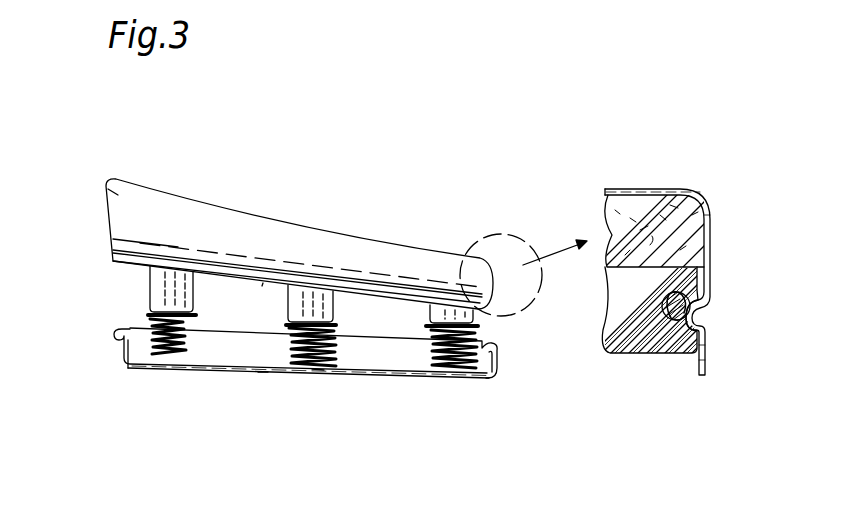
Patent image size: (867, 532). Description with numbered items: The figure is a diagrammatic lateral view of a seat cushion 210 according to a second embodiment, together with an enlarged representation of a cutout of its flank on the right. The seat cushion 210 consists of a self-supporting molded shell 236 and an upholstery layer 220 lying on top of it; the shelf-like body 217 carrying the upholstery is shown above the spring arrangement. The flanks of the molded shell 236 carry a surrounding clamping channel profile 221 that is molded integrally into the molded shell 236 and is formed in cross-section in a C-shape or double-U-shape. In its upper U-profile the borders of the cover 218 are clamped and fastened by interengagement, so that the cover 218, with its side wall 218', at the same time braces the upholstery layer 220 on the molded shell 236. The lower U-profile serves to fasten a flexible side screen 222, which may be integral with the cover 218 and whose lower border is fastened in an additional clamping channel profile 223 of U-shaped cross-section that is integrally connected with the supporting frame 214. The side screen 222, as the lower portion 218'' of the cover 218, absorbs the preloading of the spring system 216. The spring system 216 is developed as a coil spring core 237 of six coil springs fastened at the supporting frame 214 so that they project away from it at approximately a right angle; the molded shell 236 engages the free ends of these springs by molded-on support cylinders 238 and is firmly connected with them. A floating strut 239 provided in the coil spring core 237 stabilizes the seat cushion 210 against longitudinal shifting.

The seat cushion 210 is at (243, 190).
The supporting frame 214 is at (213, 368).
The spring system 216 is at (318, 376).
The shelf 217 is at (362, 226).
The cover 218 is at (657, 244).
The profile side wall 218' is at (726, 193).
The lower portion of the cover 218'' is at (688, 402).
The upholstery layer 220 is at (118, 196).
The clamping channel profile 221 is at (118, 249).
The flexible side screen 222 is at (695, 366).
The additional clamping channel profile 223 is at (113, 328).
The molded shell 236 is at (263, 283).
The coil spring core 237 is at (440, 350).
The support cylinders 238 is at (148, 278).
The floating strut 239 is at (262, 372).